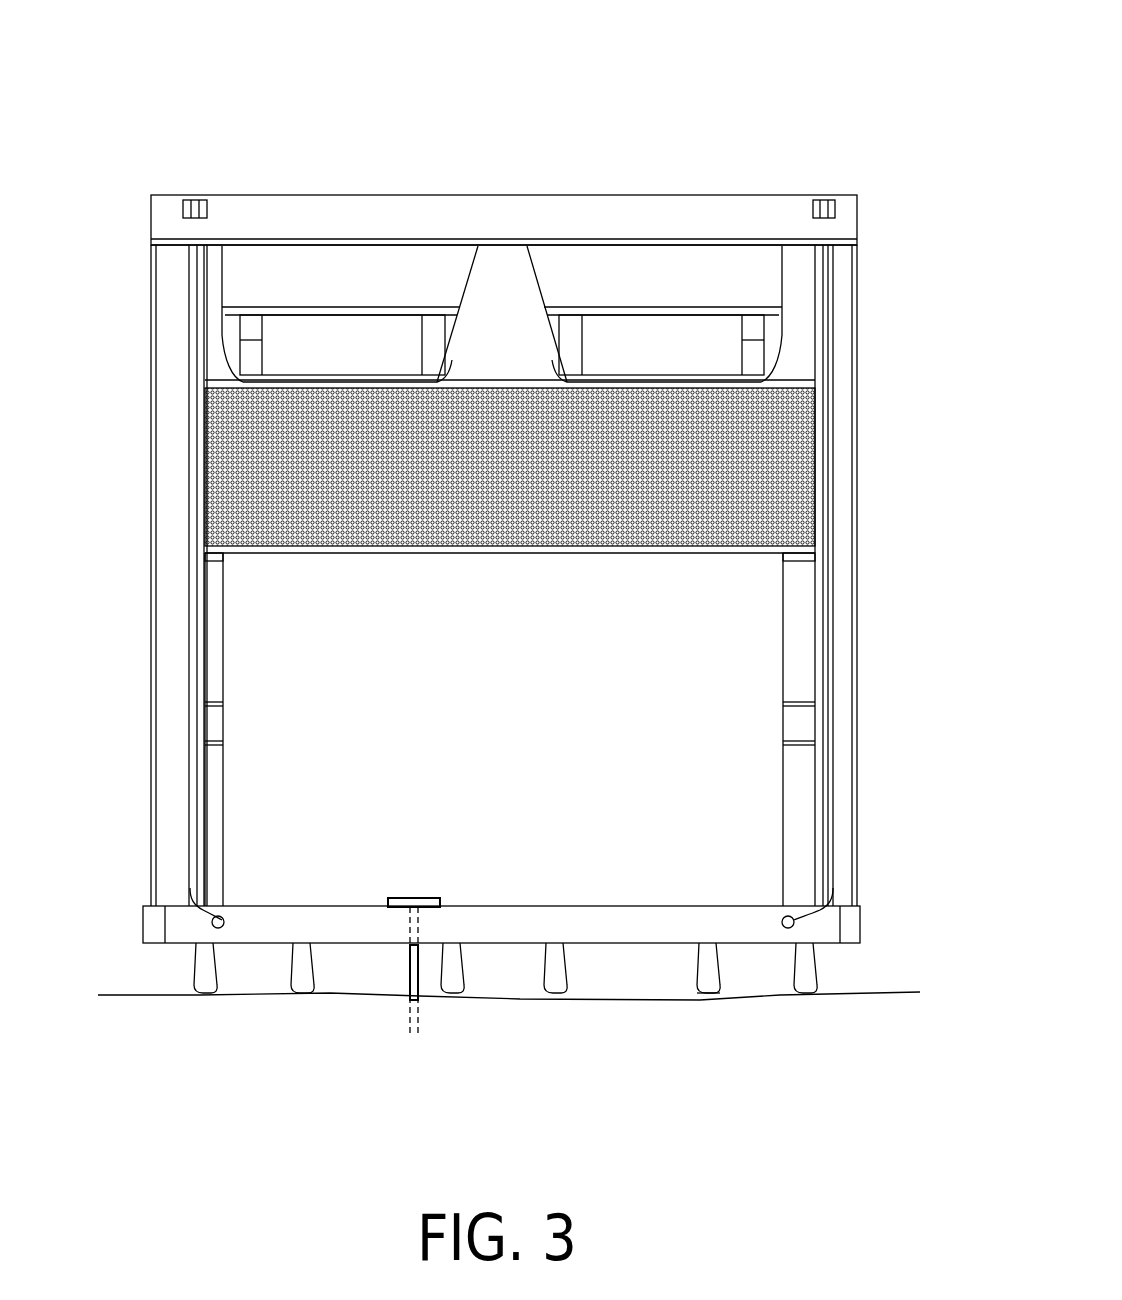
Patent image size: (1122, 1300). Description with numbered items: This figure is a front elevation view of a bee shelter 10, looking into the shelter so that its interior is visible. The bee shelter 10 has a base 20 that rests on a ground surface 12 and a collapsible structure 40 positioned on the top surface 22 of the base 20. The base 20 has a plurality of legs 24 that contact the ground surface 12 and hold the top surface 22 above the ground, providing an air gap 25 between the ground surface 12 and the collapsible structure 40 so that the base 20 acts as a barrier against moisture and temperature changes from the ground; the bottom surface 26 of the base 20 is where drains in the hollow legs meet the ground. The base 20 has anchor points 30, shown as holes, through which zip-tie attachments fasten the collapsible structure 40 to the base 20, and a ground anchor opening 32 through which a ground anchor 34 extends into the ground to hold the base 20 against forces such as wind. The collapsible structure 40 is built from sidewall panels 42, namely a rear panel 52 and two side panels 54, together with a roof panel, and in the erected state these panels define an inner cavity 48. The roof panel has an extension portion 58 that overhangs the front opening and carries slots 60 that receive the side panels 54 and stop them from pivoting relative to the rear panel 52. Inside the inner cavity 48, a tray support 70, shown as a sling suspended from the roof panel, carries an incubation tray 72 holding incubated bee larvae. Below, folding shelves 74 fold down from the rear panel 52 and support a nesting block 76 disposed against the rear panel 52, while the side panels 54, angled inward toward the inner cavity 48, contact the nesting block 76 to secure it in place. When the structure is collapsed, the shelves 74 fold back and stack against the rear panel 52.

The bee shelter 10 is at (508, 114).
The ground surface 12 is at (887, 1002).
The base 20 is at (632, 928).
The top surface 22 is at (587, 905).
The legs 24 is at (495, 965).
The air gap 25 is at (315, 972).
The bottom surface 26 is at (733, 990).
The anchor points 30 is at (788, 928).
The ground anchor opening 32 is at (437, 899).
The ground anchor 34 is at (418, 952).
The collapsible structure 40 is at (857, 401).
The sidewall panels 42 is at (172, 548).
The inner cavity 48 is at (650, 583).
The rear panel 52 is at (693, 623).
The side panels 54 is at (848, 468).
The extension portion 58 is at (246, 201).
The slots 60 is at (811, 205).
The tray support 70 is at (475, 280).
The incubation tray 72 is at (343, 340).
The shelf 74 is at (218, 720).
The nesting block 76 is at (605, 471).